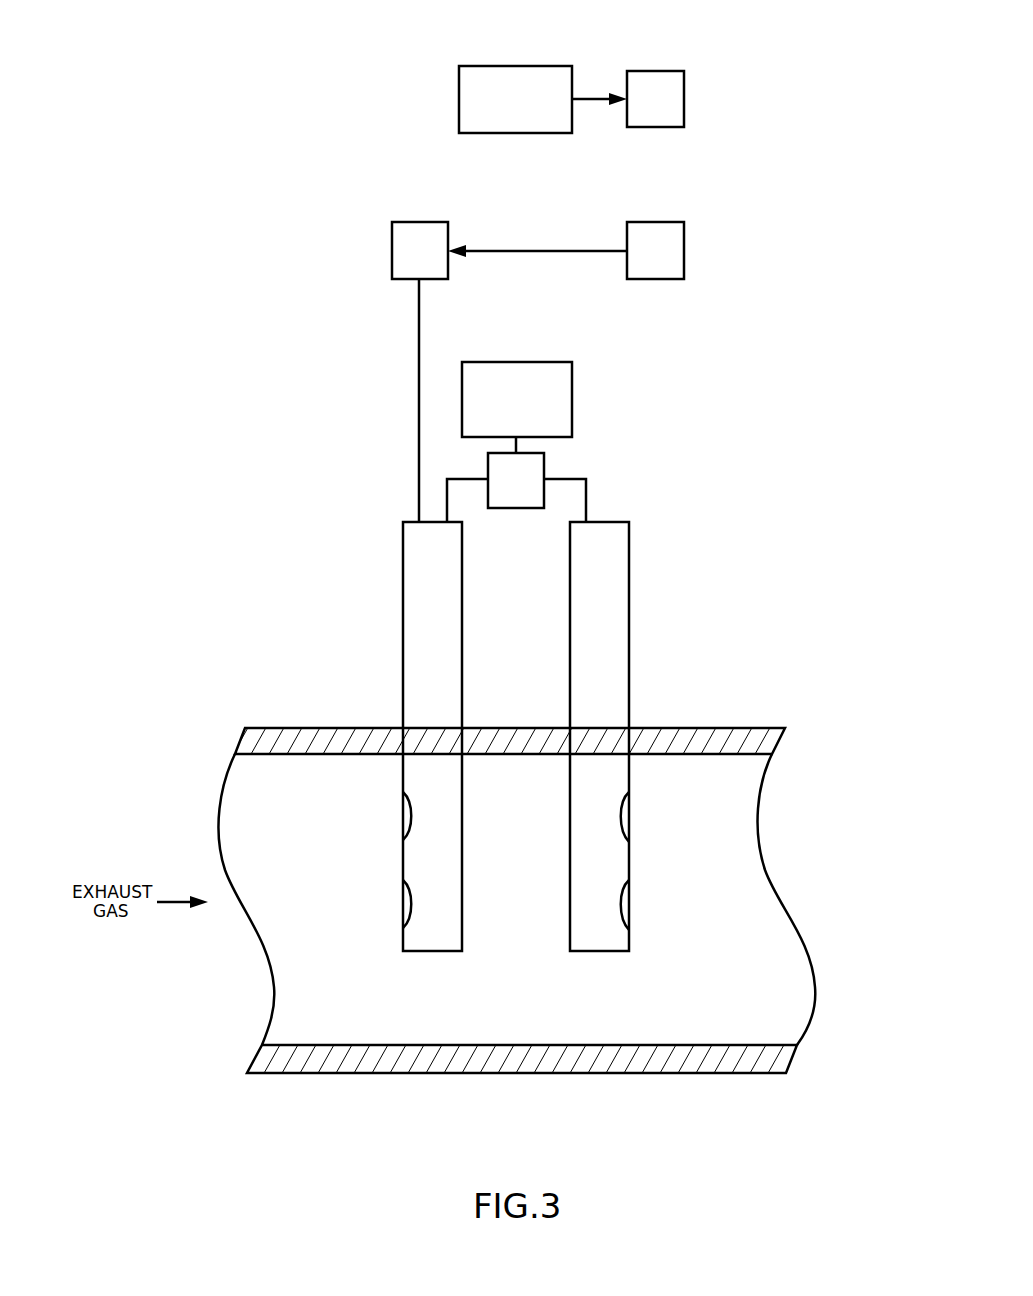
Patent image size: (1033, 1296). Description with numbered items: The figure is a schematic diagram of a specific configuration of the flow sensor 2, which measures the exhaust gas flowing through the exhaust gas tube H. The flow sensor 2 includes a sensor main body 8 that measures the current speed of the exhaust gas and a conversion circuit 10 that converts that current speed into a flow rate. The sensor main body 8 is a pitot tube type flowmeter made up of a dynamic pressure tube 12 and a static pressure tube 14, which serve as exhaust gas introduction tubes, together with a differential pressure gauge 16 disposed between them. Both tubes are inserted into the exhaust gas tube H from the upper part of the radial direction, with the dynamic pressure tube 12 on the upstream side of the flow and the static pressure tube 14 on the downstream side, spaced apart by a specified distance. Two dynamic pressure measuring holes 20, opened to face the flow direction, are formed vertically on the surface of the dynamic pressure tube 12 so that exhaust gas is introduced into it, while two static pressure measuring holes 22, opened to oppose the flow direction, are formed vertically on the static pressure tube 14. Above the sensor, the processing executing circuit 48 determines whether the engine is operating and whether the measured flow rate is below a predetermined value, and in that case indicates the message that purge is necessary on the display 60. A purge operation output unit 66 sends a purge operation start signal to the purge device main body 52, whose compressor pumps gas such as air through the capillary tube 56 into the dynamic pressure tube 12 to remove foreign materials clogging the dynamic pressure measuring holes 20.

The flow sensor 2 is at (646, 366).
The sensor main body 8 is at (674, 489).
The conversion circuit 10 is at (518, 362).
The dynamic pressure tube 12 is at (403, 648).
The static pressure tube 14 is at (629, 648).
The differential pressure gauge 16 is at (516, 508).
The dynamic pressure measuring holes 20 is at (403, 818).
The static pressure measuring holes 22 is at (629, 820).
The processing executing circuit 48 is at (514, 66).
The purge device main body 52 is at (392, 250).
The capillary tube 56 is at (419, 418).
The display 60 is at (655, 71).
The purge operation output unit 66 is at (684, 251).
The exhaust gas tube H is at (365, 1074).